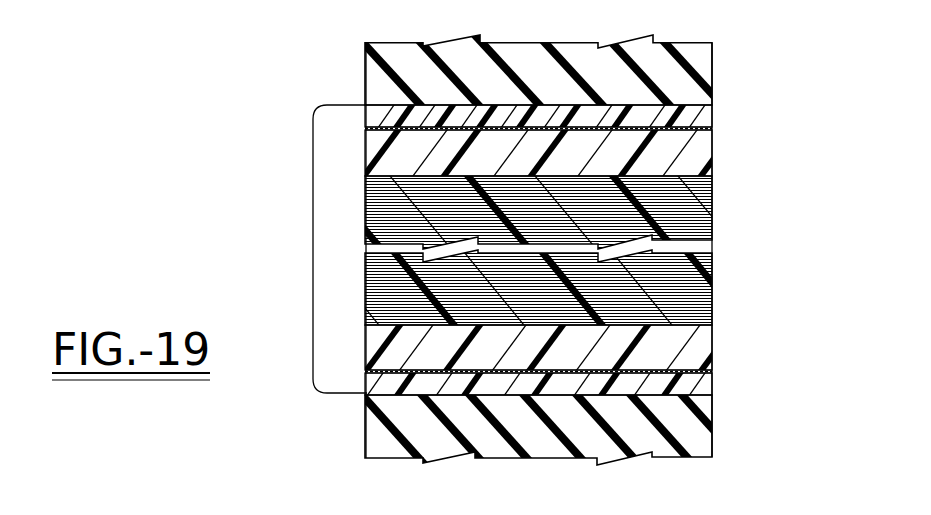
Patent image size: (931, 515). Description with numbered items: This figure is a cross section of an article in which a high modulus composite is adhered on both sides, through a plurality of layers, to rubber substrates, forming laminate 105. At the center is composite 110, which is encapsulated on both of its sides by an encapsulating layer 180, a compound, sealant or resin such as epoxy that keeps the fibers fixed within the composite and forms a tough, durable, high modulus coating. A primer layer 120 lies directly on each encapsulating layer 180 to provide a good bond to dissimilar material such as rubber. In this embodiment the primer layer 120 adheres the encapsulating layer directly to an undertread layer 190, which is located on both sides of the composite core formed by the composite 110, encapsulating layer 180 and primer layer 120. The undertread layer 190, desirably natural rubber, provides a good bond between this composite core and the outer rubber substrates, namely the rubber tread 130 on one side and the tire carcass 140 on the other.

The laminate 105 is at (312, 245).
The composite 110 is at (713, 202).
The primer layer 120 is at (713, 128).
The rubber tread 130 is at (713, 63).
The tire carcass 140 is at (702, 420).
The encapsulating layer 180 is at (713, 156).
The undertread layer 190 is at (713, 118).